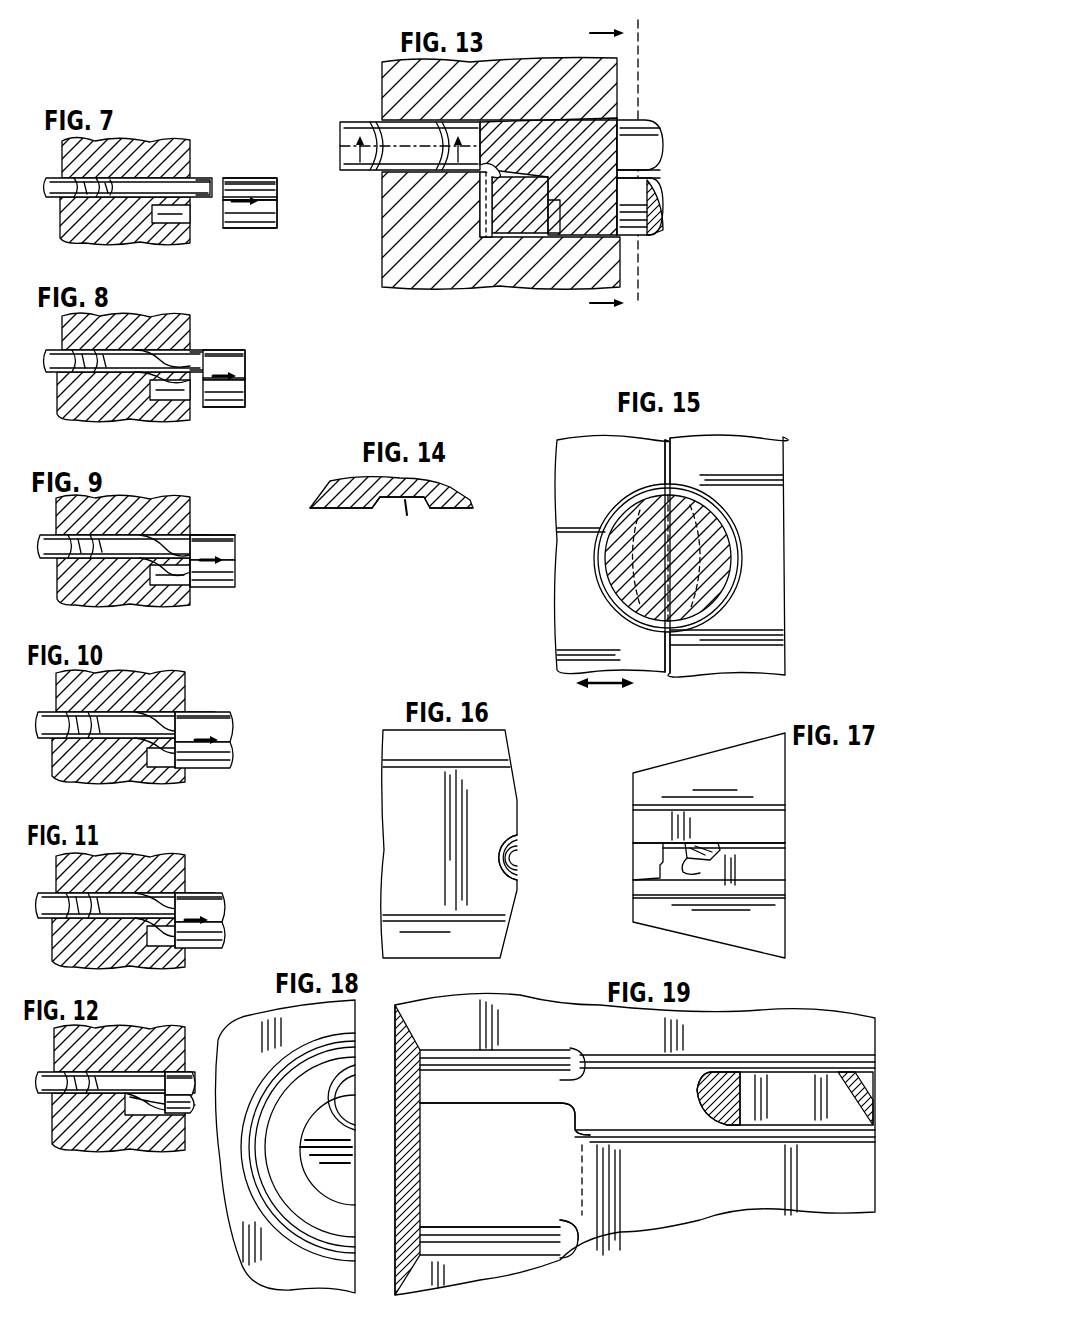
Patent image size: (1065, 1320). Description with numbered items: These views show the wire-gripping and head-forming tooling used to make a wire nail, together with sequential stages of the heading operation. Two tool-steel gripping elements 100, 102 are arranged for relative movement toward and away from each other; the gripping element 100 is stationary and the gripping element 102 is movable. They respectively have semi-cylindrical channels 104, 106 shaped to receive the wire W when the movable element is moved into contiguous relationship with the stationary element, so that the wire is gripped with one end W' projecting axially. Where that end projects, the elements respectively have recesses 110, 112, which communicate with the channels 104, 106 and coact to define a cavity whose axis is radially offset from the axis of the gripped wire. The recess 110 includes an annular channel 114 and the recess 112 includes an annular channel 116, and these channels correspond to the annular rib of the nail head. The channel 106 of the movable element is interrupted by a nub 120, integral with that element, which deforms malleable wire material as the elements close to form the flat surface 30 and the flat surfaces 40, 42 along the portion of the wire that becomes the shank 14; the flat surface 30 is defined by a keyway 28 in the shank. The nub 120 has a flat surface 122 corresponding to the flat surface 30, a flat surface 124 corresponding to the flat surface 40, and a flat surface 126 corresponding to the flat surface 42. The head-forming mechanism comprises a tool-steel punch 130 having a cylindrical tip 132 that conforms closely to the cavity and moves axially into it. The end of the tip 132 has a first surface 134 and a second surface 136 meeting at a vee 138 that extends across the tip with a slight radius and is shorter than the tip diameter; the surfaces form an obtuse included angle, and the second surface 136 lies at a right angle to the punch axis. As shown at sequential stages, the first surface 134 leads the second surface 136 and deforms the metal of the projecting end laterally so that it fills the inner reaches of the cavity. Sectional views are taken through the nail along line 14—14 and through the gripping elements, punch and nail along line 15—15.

In FIG. 13, the shank 14 is at (410, 159).
In FIG. 13, the section line 15 is at (632, 169).
In FIG. 14, the keyway 28 is at (407, 517).
In FIG. 7, the flat surface 30 is at (88, 190).
In FIG. 8, the flat surface 30 is at (92, 366).
In FIG. 9, the flat surface 30 is at (85, 550).
In FIG. 10, the flat surface 30 is at (93, 723).
In FIG. 11, the flat surface 30 is at (90, 905).
In FIG. 12, the flat surface 30 is at (87, 1090).
In FIG. 14, the flat surface 30 is at (388, 500).
In FIG. 14, the flat surface 40 is at (430, 510).
In FIG. 14, the flat surface 42 is at (372, 510).
In FIG. 7, the gripping element 100 is at (103, 150).
In FIG. 8, the gripping element 100 is at (117, 320).
In FIG. 9, the gripping element 100 is at (152, 489).
In FIG. 10, the gripping element 100 is at (150, 690).
In FIG. 11, the gripping element 100 is at (188, 847).
In FIG. 12, the gripping element 100 is at (183, 1019).
In FIG. 13, the gripping element 100 is at (497, 70).
In FIG. 15, the gripping element 100 is at (705, 457).
In FIG. 15, the gripping element 102 is at (600, 455).
In FIG. 16, the gripping element 102 is at (485, 750).
In FIG. 17, the gripping element 102 is at (693, 768).
In FIG. 18, the gripping element 102 is at (347, 1013).
In FIG. 19, the gripping element 102 is at (758, 1020).
In FIG. 13, the semi-cylindrical channel 104 is at (490, 185).
In FIG. 12, the semi-cylindrical channel 106 is at (138, 1115).
In FIG. 16, the semi-cylindrical channel 106 is at (520, 852).
In FIG. 18, the semi-cylindrical channel 106 is at (338, 1128).
In FIG. 7, the recess 110 is at (190, 222).
In FIG. 8, the recess 110 is at (185, 400).
In FIG. 9, the recess 110 is at (180, 580).
In FIG. 13, the recess 110 is at (560, 237).
In FIG. 18, the recess 112 is at (320, 1163).
In FIG. 19, the recess 112 is at (455, 1178).
In FIG. 13, the annular channel 114 is at (497, 200).
In FIG. 19, the annular channel 116 is at (572, 1237).
In FIG. 16, the nub 120 is at (517, 845).
In FIG. 17, the nub 120 is at (700, 858).
In FIG. 18, the nub 120 is at (325, 1090).
In FIG. 19, the nub 120 is at (780, 1117).
In FIG. 17, the flat surface 122 is at (700, 843).
In FIG. 19, the flat surface 122 is at (795, 1112).
In FIG. 17, the flat surface 124 is at (708, 870).
In FIG. 19, the flat surface 124 is at (700, 1113).
In FIG. 17, the flat surface 126 is at (733, 842).
In FIG. 19, the flat surface 126 is at (853, 1103).
In FIG. 7, the punch 130 is at (285, 183).
In FIG. 8, the punch 130 is at (255, 363).
In FIG. 9, the punch 130 is at (250, 551).
In FIG. 10, the punch 130 is at (243, 716).
In FIG. 11, the punch 130 is at (235, 893).
In FIG. 12, the punch 130 is at (208, 1100).
In FIG. 13, the punch 130 is at (680, 136).
In FIG. 7, the cylindrical tip 132 is at (253, 178).
In FIG. 8, the cylindrical tip 132 is at (233, 360).
In FIG. 9, the cylindrical tip 132 is at (203, 543).
In FIG. 10, the cylindrical tip 132 is at (200, 723).
In FIG. 11, the cylindrical tip 132 is at (190, 902).
In FIG. 12, the cylindrical tip 132 is at (185, 1080).
In FIG. 13, the cylindrical tip 132 is at (650, 120).
In FIG. 15, the cylindrical tip 132 is at (713, 527).
In FIG. 7, the first surface 134 is at (218, 180).
In FIG. 8, the first surface 134 is at (227, 352).
In FIG. 13, the first surface 134 is at (575, 97).
In FIG. 7, the second surface 136 is at (219, 223).
In FIG. 8, the second surface 136 is at (201, 390).
In FIG. 13, the second surface 136 is at (660, 192).
In FIG. 7, the vee 138 is at (250, 186).
In FIG. 13, the vee 138 is at (633, 157).